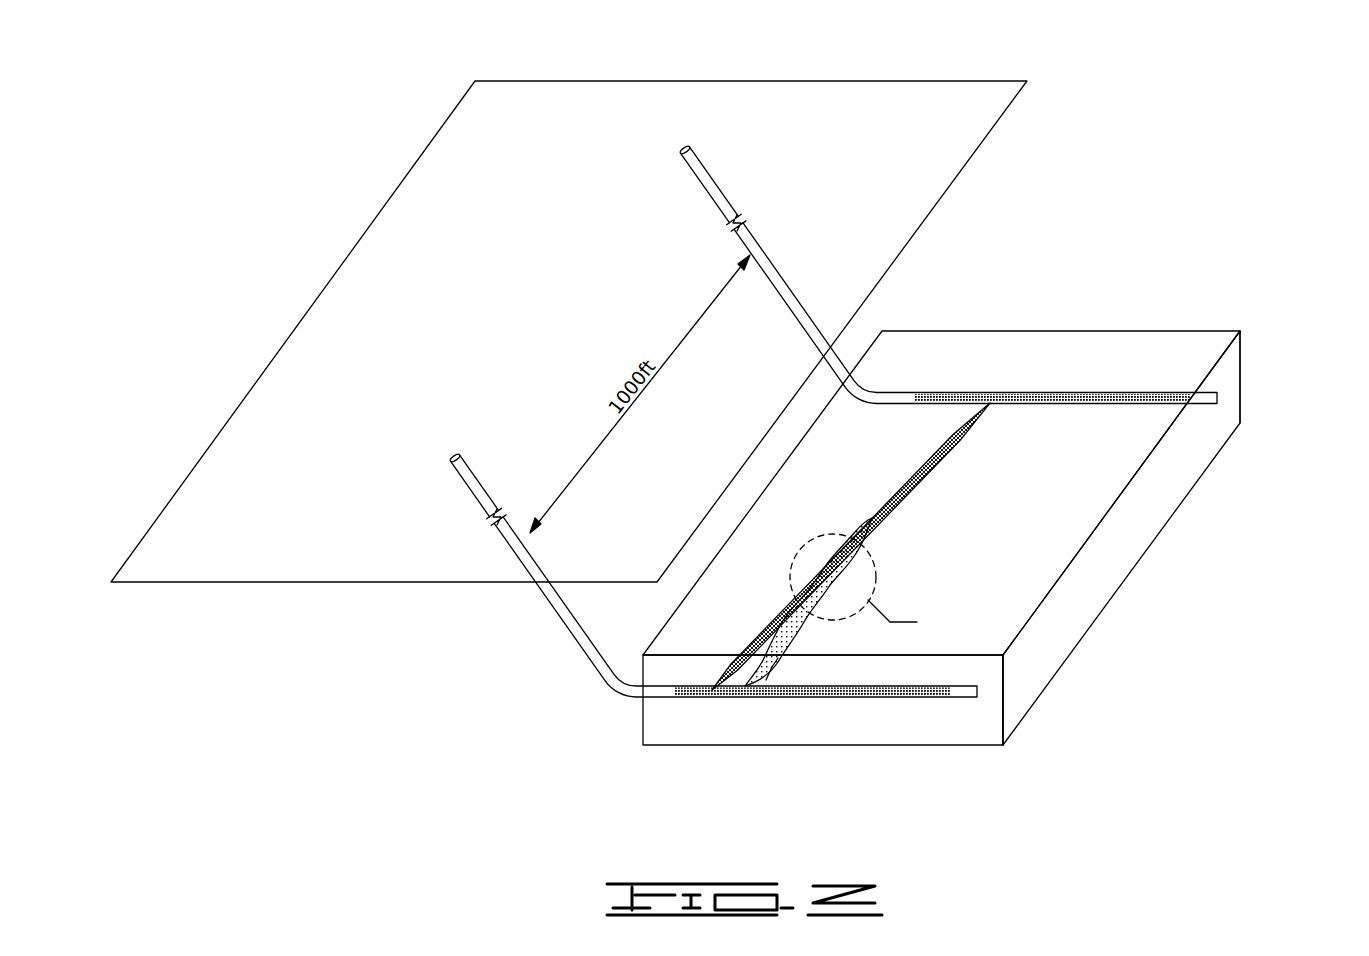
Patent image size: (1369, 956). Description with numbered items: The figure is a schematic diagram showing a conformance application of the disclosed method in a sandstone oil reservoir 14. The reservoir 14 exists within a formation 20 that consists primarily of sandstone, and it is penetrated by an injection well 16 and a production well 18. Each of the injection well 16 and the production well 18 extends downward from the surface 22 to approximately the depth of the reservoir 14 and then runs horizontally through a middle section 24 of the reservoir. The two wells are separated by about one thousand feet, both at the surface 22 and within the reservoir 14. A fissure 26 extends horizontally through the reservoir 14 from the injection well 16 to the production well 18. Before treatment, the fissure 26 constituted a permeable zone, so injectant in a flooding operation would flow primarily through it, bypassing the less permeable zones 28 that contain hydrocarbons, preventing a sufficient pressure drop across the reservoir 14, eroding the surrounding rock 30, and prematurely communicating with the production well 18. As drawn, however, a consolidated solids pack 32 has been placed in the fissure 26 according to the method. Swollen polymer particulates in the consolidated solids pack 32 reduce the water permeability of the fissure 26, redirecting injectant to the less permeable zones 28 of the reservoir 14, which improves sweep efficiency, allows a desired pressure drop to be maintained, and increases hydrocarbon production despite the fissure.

The oil reservoir 14 is at (1180, 352).
The injection well 16 is at (520, 567).
The production well 18 is at (765, 250).
The formation 20 is at (1113, 560).
The surface 22 is at (465, 291).
The middle section 24 is at (1232, 380).
The fissure 26 is at (960, 435).
The less permeable zones 28 is at (997, 506).
The rock 30 is at (881, 510).
The consolidated solids pack 32 is at (766, 680).